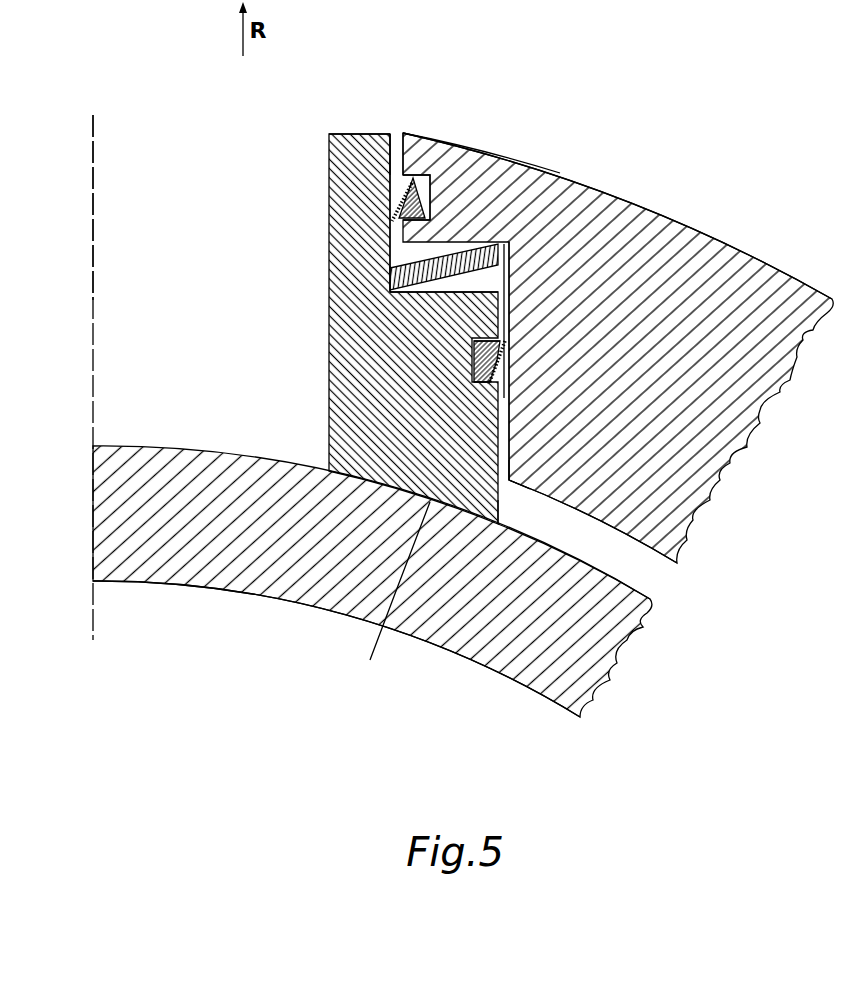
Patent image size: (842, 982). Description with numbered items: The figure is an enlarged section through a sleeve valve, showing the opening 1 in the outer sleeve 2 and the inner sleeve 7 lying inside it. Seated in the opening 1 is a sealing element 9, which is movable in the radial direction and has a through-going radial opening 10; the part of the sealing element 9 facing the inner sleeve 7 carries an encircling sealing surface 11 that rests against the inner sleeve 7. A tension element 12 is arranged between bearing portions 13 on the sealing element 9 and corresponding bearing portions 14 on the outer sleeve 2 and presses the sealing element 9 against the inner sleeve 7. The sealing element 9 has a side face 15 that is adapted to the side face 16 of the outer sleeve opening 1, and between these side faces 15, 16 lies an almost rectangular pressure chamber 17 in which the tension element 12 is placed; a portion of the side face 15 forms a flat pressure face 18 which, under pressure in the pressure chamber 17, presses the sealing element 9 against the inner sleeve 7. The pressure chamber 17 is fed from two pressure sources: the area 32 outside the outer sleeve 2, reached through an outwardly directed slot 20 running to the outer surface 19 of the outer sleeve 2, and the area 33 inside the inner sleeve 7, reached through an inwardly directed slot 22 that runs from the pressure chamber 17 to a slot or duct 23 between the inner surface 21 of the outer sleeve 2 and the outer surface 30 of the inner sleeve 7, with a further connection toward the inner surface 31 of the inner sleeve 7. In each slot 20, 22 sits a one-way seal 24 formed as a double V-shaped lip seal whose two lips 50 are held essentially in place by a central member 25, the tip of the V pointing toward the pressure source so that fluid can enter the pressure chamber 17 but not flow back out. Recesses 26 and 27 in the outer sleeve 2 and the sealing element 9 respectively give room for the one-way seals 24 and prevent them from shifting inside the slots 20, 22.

The outer sleeve opening 1 is at (124, 168).
The outer sleeve 2 is at (737, 270).
The inner sleeve 7 is at (542, 670).
The sealing element 9 is at (360, 433).
The through-going radial opening 10 is at (168, 168).
The sealing surface 11 is at (392, 595).
The tension element 12 is at (386, 284).
The bearing portions 13 is at (500, 258).
The bearing portions 14 is at (350, 220).
The side face 15 is at (363, 132).
The side face 16 is at (420, 137).
The pressure chamber 17 is at (577, 180).
The pressure face 18 is at (480, 293).
The outer surface 19 is at (517, 160).
The outwardly directed slot 20 is at (396, 142).
The inner surface 21 is at (583, 512).
The inwardly directed slot 22 is at (503, 480).
The slot or duct 23 is at (660, 570).
The one-way seal 24 is at (340, 176).
The central member 25 is at (478, 357).
The recess 26 is at (470, 150).
The recess 27 is at (484, 372).
The outer surface 30 is at (628, 586).
The inner surface 31 is at (466, 662).
The area outside the outer sleeve 32 is at (527, 42).
The area inside the inner sleeve 33 is at (205, 689).
The lips 50 is at (475, 345).